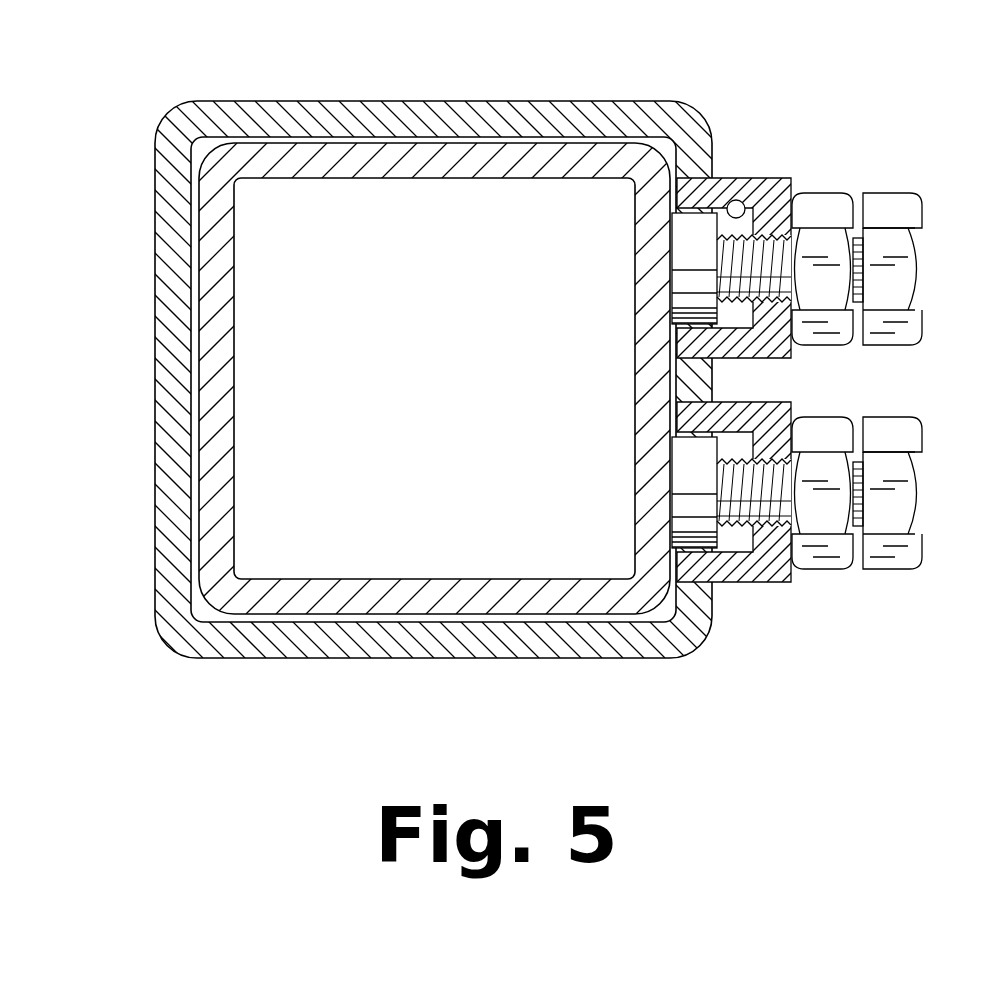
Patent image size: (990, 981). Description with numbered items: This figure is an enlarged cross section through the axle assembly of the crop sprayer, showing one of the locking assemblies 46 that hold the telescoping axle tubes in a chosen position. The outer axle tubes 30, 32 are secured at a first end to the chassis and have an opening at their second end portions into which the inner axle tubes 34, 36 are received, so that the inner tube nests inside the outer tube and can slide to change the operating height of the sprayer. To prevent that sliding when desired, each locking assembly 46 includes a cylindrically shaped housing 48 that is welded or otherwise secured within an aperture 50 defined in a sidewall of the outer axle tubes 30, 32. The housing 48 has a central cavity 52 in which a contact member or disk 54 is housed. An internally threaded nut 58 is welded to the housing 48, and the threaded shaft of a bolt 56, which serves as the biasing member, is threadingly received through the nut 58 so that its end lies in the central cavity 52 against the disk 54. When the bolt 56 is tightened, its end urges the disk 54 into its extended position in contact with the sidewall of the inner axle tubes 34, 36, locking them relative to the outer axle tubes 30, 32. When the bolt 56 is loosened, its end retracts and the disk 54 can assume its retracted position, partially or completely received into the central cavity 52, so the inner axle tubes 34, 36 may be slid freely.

The outer axle tube 30 is at (495, 343).
The outer axle tube 32 is at (465, 120).
The inner axle tube 34 is at (495, 378).
The inner axle tube 36 is at (412, 162).
The locking assembly 46 is at (736, 365).
The housing 48 is at (716, 178).
The aperture 50 is at (710, 575).
The central cavity 52 is at (742, 204).
The disk 54 is at (692, 247).
The bolt 56 is at (908, 272).
The nut 58 is at (834, 200).